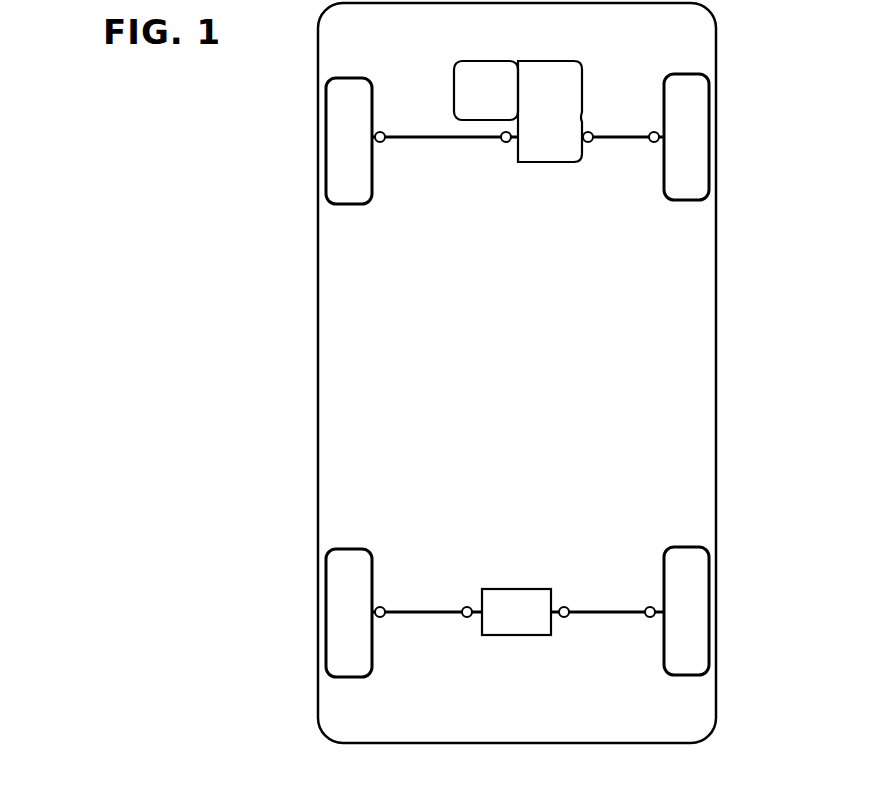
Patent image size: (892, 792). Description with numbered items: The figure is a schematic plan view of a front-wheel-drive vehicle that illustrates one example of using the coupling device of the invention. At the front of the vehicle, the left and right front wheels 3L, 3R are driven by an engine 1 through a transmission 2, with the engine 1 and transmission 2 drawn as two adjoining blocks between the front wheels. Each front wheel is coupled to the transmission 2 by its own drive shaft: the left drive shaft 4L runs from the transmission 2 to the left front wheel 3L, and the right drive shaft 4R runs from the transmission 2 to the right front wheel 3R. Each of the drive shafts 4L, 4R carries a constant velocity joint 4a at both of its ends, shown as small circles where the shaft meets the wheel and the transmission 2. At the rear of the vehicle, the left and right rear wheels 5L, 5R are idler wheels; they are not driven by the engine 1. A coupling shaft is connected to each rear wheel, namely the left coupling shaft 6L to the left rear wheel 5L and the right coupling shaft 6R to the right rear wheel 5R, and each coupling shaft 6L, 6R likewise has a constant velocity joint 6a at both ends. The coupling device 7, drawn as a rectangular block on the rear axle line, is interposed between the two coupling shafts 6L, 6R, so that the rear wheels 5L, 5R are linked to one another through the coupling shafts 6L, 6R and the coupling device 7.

The engine 1 is at (487, 72).
The transmission 2 is at (574, 73).
The left front wheel 3L is at (334, 130).
The right front wheel 3R is at (700, 130).
The left drive shaft 4L is at (455, 139).
The right drive shaft 4R is at (620, 136).
The constant velocity joints 4a is at (382, 143).
The left rear wheel 5L is at (334, 611).
The right rear wheel 5R is at (700, 613).
The left coupling shaft 6L is at (427, 611).
The right coupling shaft 6R is at (612, 611).
The constant velocity joints 6a is at (465, 617).
The coupling device 7 is at (513, 593).